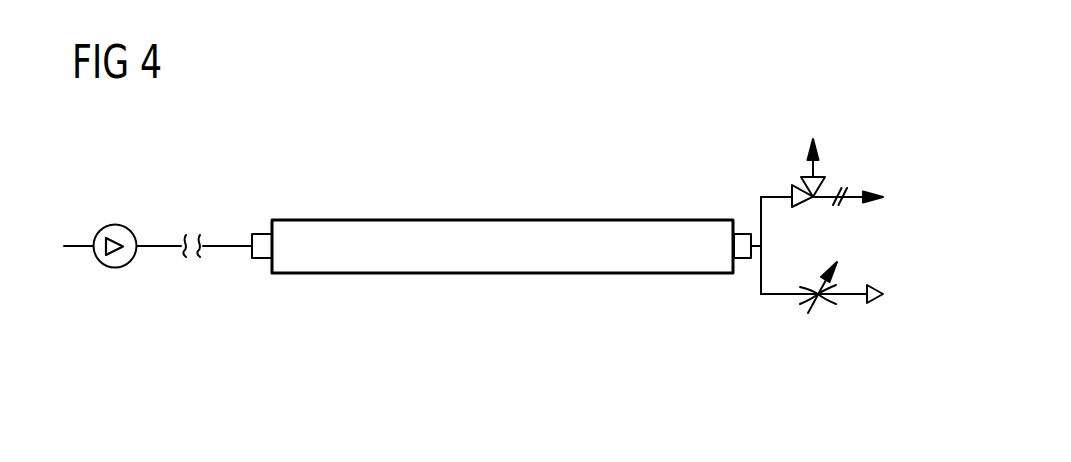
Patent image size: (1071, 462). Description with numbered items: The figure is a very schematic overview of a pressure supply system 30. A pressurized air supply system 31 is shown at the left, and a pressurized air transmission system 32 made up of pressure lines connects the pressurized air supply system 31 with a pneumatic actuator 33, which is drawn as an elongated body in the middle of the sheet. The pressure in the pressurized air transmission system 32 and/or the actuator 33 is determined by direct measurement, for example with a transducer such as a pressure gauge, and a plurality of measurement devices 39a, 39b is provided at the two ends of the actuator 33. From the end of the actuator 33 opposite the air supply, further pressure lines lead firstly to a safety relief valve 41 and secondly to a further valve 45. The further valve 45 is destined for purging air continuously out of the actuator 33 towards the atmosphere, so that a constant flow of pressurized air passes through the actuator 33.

The pressure supply system 30 is at (410, 141).
The pressurized air supply system 31 is at (113, 223).
The pressurized air transmission system 32 is at (233, 245).
The pneumatic actuator 33 is at (502, 232).
The measurement device 39a is at (255, 258).
The measurement device 39b is at (737, 237).
The safety relief valve 41 is at (850, 138).
The further valve 45 is at (808, 344).